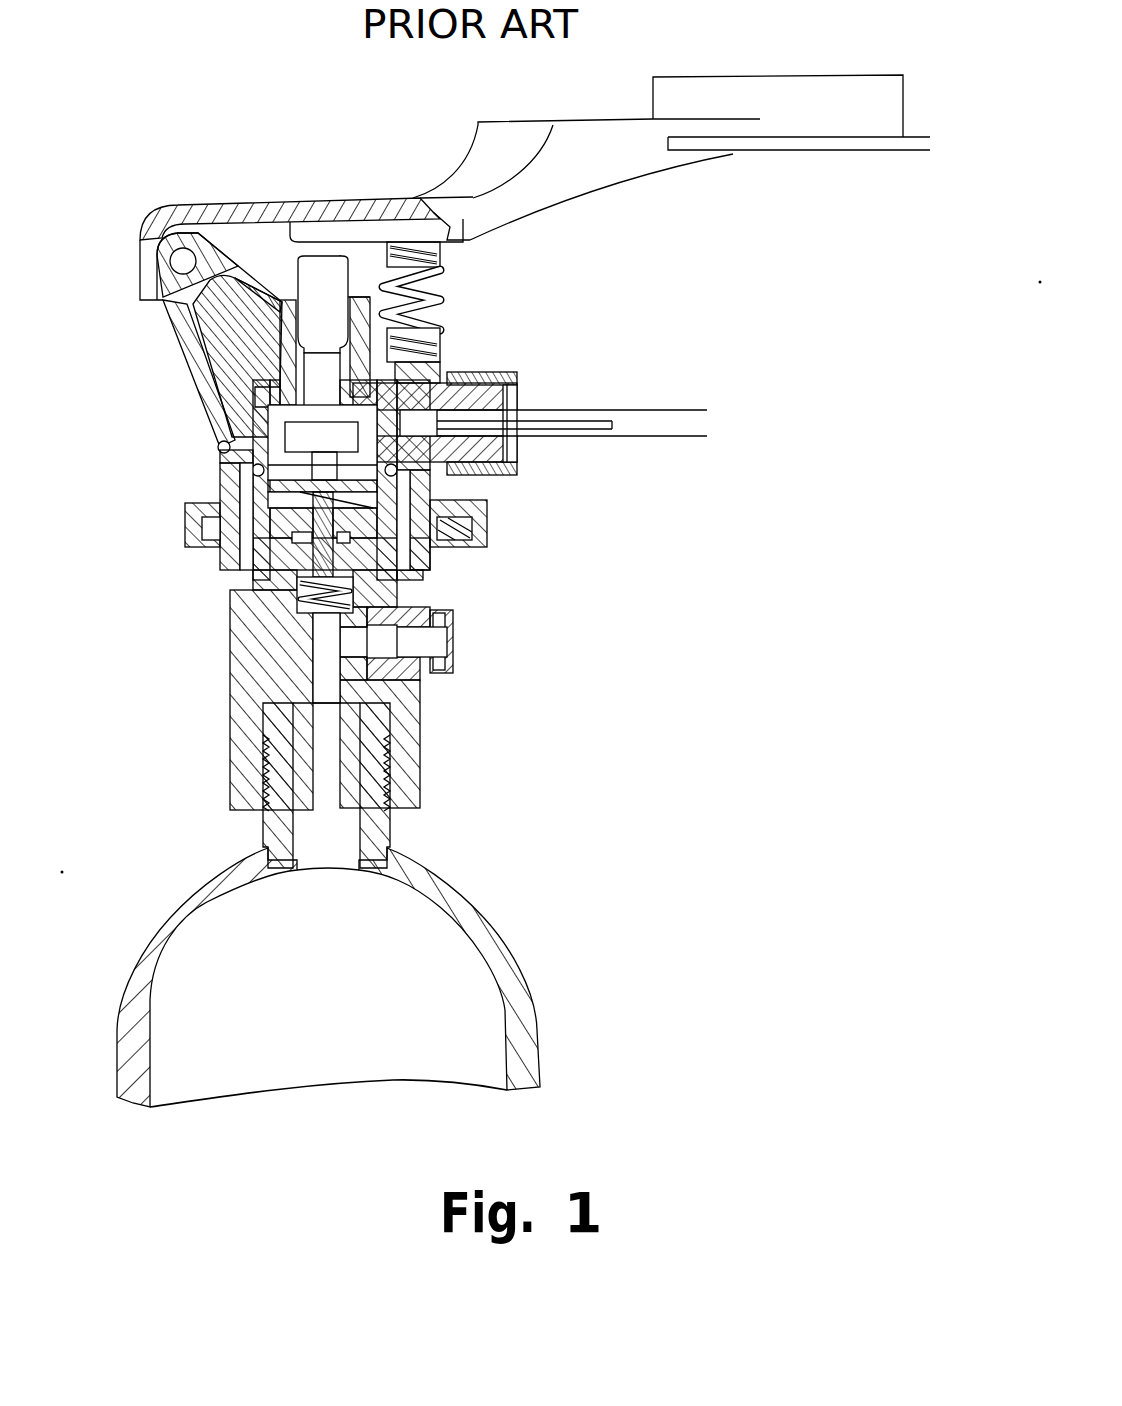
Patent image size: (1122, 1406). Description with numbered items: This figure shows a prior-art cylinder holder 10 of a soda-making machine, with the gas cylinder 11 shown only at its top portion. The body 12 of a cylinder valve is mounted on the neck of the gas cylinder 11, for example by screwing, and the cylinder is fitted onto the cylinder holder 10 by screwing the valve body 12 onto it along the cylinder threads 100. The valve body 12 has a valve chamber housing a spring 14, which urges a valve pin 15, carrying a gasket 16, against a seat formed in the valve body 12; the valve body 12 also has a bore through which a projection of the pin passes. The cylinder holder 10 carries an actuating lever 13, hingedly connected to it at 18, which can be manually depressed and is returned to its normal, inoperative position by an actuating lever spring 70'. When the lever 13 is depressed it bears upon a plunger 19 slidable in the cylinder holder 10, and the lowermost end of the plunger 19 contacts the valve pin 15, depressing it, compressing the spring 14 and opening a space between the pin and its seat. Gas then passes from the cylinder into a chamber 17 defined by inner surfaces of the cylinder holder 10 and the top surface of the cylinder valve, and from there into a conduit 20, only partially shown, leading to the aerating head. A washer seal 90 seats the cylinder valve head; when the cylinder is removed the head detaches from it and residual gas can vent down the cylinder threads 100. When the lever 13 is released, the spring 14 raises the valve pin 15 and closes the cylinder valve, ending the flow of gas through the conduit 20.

The cylinder holder 10 is at (213, 473).
The gas cylinder 11 is at (437, 943).
The valve body 12 is at (260, 663).
The actuating lever 13 is at (635, 158).
The spring 14 is at (370, 604).
The valve pin 15 is at (490, 522).
The gasket 16 is at (293, 540).
The chamber 17 is at (213, 413).
The hinge connection 18 is at (183, 258).
The plunger 19 is at (327, 287).
The conduit 20 is at (663, 423).
The actuating lever spring 70' is at (452, 302).
The washer seal 90 is at (287, 465).
The cylinder threads 100 is at (263, 767).